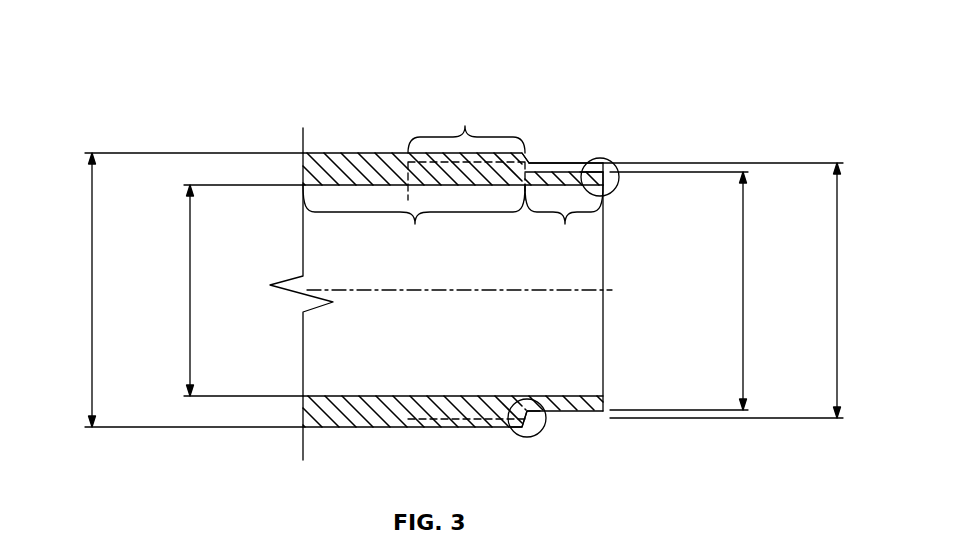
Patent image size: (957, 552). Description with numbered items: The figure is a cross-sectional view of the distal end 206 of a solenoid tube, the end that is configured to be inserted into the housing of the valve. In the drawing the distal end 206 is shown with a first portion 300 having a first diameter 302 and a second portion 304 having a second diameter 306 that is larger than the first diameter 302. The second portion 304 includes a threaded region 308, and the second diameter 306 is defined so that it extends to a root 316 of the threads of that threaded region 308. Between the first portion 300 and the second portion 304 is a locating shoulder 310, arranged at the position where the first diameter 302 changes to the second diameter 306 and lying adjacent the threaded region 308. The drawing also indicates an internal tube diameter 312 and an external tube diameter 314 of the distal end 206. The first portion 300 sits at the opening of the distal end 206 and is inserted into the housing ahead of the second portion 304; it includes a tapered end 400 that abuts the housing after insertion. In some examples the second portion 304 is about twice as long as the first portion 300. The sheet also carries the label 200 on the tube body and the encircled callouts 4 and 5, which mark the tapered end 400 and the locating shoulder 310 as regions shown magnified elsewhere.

The tubular body 200 is at (344, 165).
The distal end 206 is at (287, 63).
The first portion 300 is at (565, 224).
The first diameter 302 is at (758, 301).
The second portion 304 is at (415, 224).
The second diameter 306 is at (853, 301).
The threaded region 308 is at (465, 127).
The locating shoulder 310 is at (515, 438).
The internal tube diameter 312 is at (189, 308).
The external tube diameter 314 is at (91, 308).
The root of threads 316 is at (534, 156).
The tapered end 400 is at (612, 190).
The detail view circle FIG. 4 is at (593, 159).
The detail view circle FIG. 5 is at (538, 434).